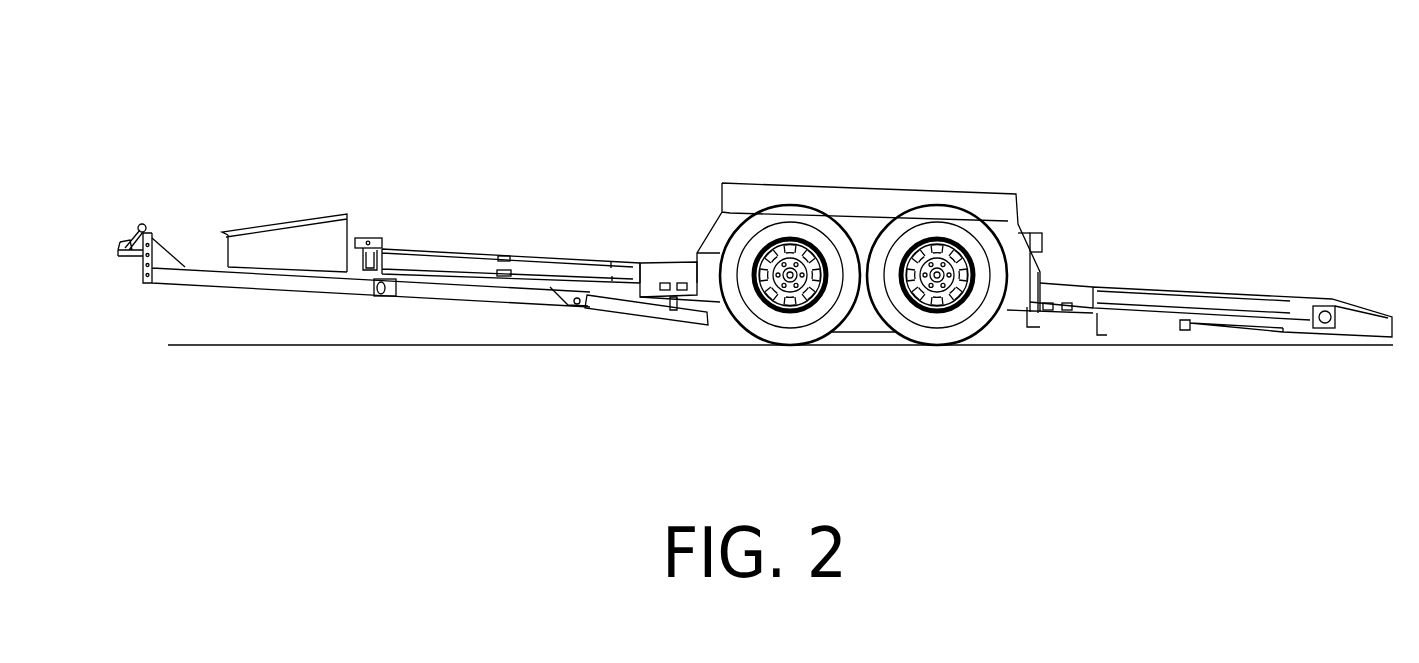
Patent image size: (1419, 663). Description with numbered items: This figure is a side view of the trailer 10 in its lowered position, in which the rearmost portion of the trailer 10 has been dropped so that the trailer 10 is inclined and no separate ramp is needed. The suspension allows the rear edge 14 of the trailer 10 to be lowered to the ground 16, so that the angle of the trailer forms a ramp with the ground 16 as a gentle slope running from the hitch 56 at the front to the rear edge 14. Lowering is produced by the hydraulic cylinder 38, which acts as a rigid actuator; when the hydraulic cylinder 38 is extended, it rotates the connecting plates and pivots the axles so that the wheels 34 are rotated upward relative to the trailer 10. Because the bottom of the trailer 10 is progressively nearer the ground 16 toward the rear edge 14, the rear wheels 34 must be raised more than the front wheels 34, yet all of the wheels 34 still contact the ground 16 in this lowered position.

The trailer 10 is at (818, 115).
The rear edge 14 is at (1380, 323).
The ground 16 is at (272, 345).
The wheels 34 is at (812, 343).
The hydraulic cylinder 38 is at (633, 317).
The hitch 56 is at (120, 257).